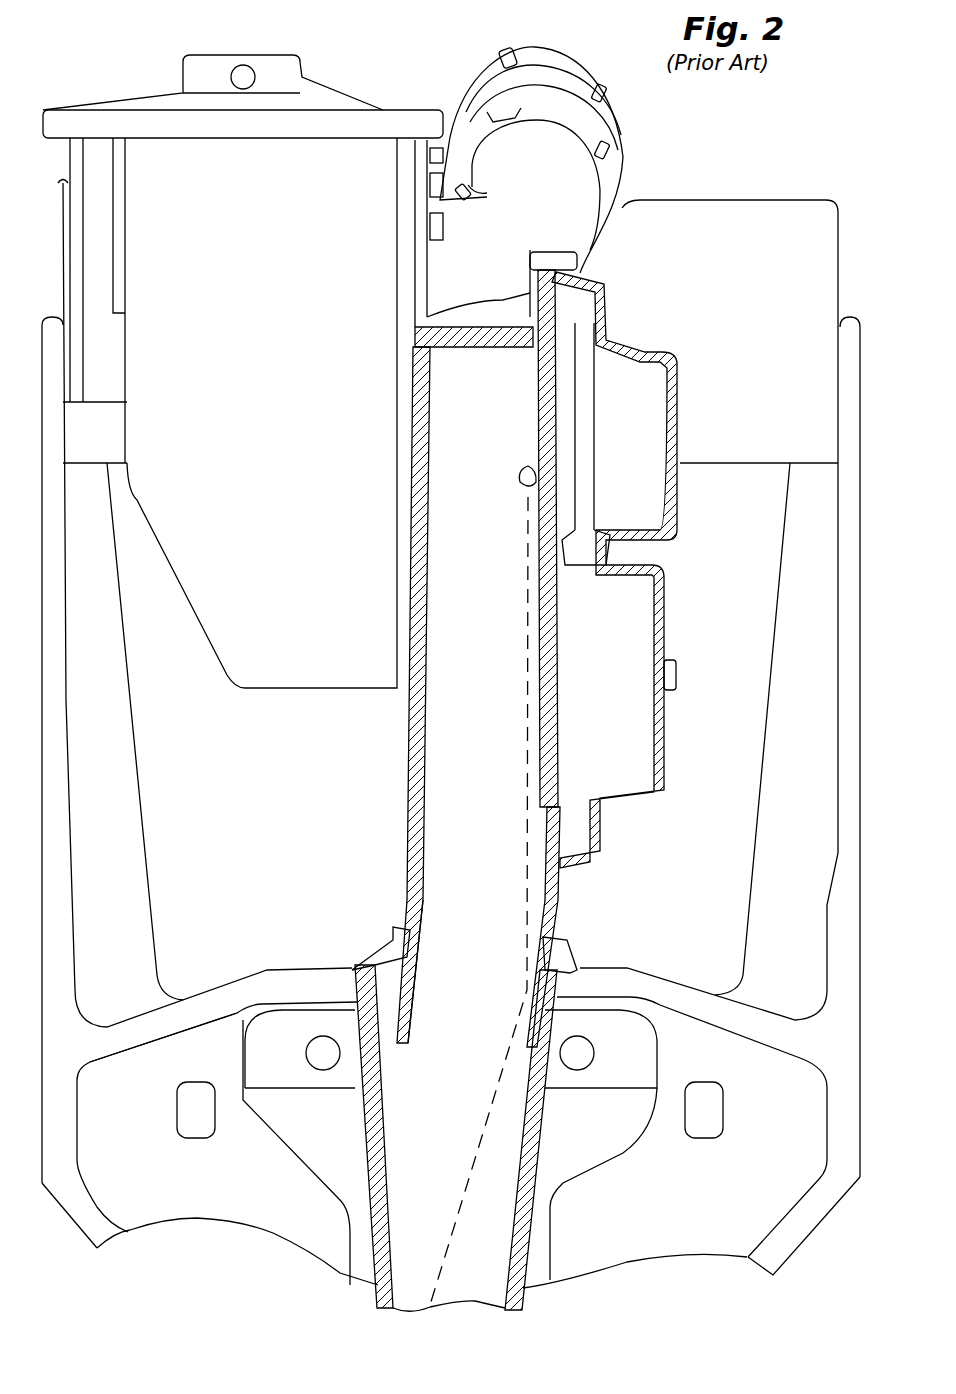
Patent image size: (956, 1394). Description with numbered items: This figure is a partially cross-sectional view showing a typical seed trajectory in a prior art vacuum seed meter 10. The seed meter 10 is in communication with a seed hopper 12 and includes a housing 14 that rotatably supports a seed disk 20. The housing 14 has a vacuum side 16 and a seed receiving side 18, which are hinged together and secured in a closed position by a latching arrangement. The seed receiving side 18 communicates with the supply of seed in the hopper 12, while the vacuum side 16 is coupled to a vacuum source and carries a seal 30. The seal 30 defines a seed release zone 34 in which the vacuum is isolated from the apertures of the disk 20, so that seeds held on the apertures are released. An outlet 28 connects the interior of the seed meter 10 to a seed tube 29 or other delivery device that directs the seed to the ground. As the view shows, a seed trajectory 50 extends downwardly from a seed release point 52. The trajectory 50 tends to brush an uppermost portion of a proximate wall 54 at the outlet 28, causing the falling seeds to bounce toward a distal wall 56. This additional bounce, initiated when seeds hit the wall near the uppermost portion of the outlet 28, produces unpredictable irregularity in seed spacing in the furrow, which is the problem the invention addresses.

The seed meter 10 is at (740, 158).
The seed hopper 12 is at (182, 176).
The housing 14 is at (700, 585).
The vacuum side 16 is at (635, 762).
The seed receiving side 18 is at (512, 822).
The seed disk 20 is at (543, 425).
The outlet 28 is at (420, 1128).
The seed tube 29 is at (362, 1175).
The seal 30 is at (596, 305).
The seed release zone 34 is at (483, 430).
The seed trajectory 50 is at (518, 620).
The seed release point 52 is at (516, 481).
The proximate wall 54 is at (540, 922).
The distal wall 56 is at (387, 1092).